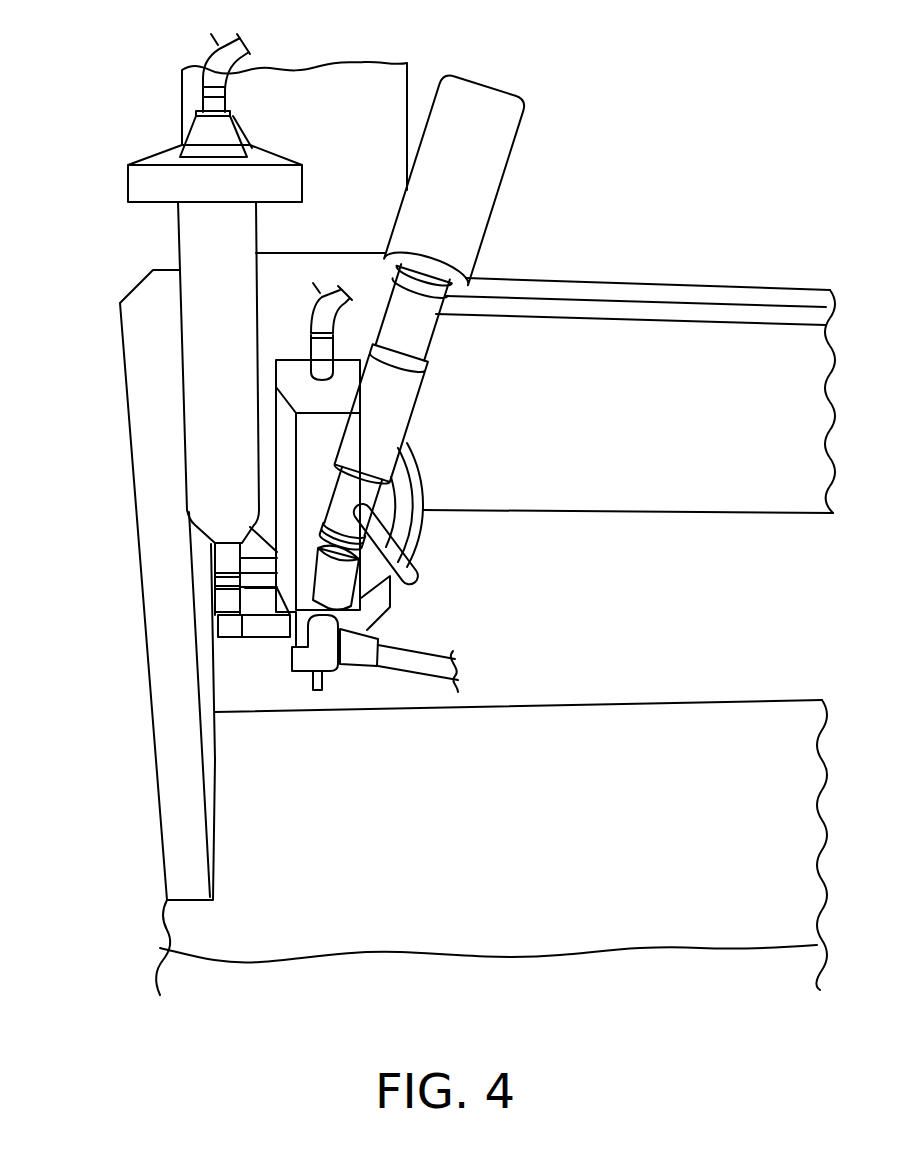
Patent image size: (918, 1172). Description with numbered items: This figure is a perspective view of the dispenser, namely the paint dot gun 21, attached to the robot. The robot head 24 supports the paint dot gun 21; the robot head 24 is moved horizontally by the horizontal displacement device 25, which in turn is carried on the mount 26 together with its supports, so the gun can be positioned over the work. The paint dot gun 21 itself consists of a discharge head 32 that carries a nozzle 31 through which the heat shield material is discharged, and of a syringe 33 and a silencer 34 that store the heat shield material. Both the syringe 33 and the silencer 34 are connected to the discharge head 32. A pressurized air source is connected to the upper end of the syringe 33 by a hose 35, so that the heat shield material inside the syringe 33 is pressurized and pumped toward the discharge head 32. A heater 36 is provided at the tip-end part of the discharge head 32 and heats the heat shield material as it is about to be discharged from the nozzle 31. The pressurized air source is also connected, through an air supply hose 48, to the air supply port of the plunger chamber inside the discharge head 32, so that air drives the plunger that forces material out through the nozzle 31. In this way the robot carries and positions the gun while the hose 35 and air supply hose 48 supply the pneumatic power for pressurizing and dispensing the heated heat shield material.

The paint dot gun 21 is at (445, 416).
The robot head 24 is at (348, 82).
The horizontal displacement device 25 is at (731, 293).
The mount 26 is at (684, 718).
The nozzle 31 is at (333, 680).
The discharge head 32 is at (290, 468).
The syringe 33 is at (212, 347).
The silencer 34 is at (492, 173).
The hose 35 is at (218, 57).
The heater 36 is at (302, 661).
The air supply hose 48 is at (420, 658).